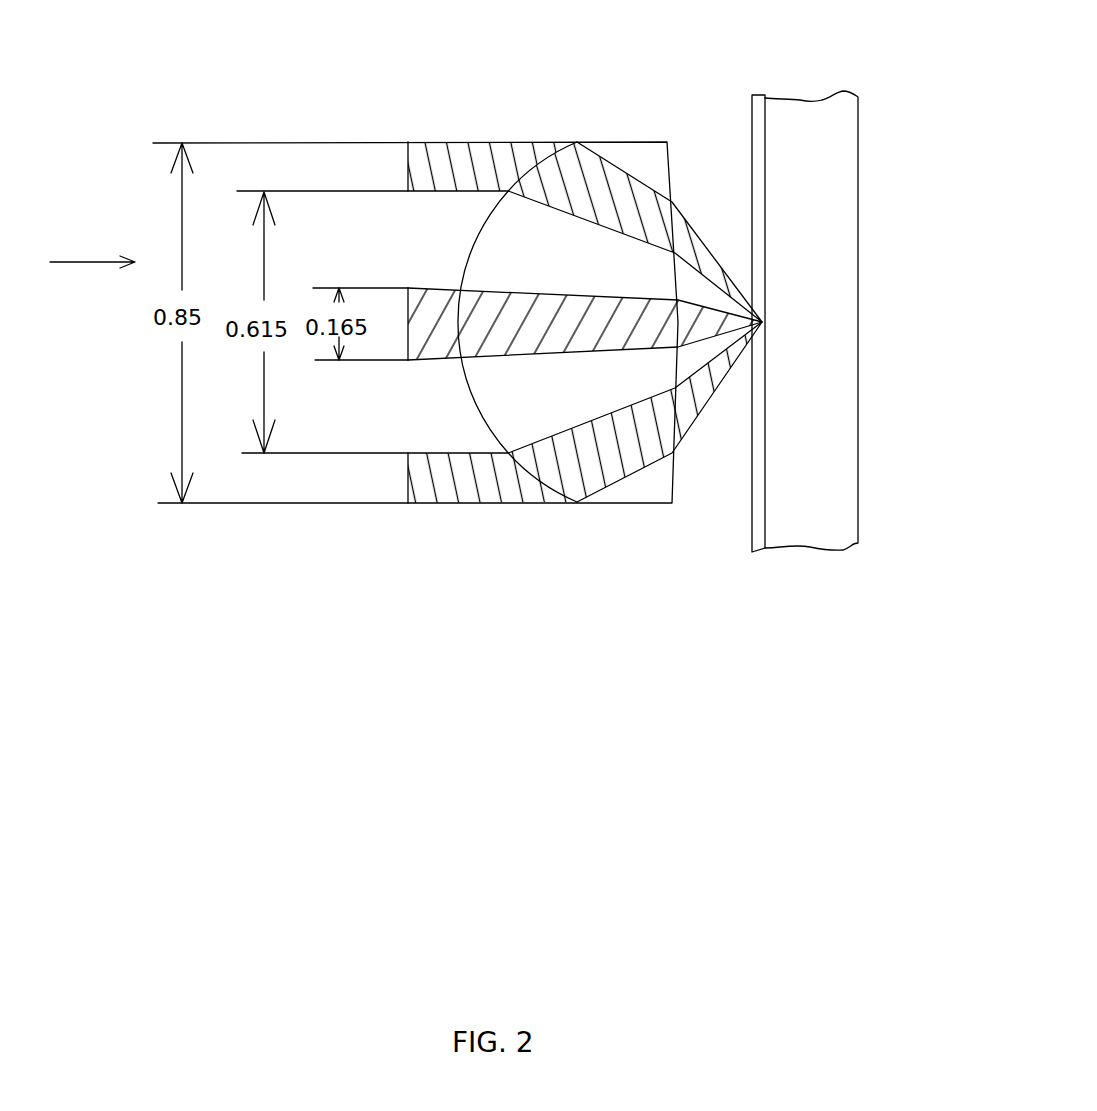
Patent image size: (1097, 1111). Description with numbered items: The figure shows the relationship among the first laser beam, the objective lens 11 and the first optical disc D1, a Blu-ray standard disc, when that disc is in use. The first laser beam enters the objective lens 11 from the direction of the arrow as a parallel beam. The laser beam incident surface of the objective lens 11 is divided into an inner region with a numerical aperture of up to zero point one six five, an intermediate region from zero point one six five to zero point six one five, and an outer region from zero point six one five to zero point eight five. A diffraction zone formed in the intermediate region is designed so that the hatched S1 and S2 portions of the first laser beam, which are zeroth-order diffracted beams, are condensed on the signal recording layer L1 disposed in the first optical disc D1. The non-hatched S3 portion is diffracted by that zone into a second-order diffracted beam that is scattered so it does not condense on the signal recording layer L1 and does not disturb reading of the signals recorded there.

The objective lens 11 is at (648, 153).
The S1 portion S1 is at (425, 350).
The S2 portion S2 is at (468, 157).
The S3 portion S3 is at (440, 247).
The signal recording layer L1 is at (766, 124).
The first optical disc D1 is at (842, 158).